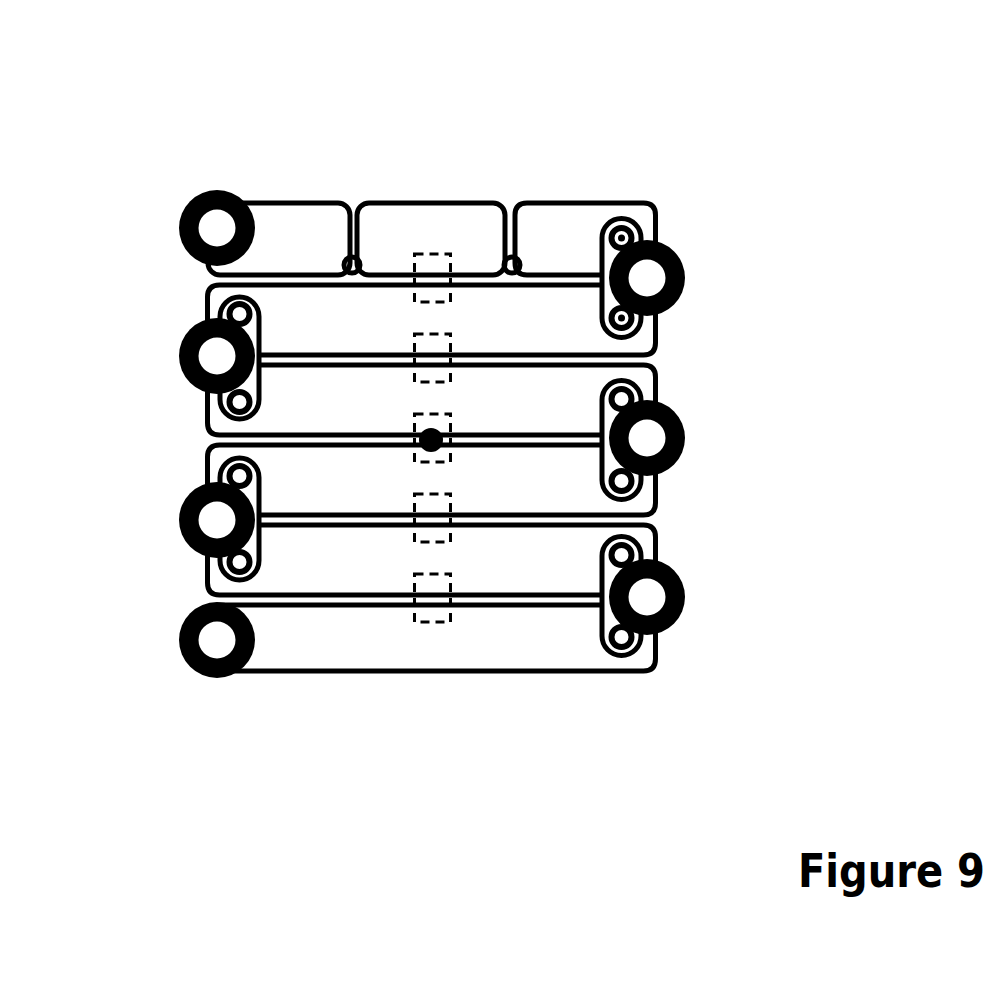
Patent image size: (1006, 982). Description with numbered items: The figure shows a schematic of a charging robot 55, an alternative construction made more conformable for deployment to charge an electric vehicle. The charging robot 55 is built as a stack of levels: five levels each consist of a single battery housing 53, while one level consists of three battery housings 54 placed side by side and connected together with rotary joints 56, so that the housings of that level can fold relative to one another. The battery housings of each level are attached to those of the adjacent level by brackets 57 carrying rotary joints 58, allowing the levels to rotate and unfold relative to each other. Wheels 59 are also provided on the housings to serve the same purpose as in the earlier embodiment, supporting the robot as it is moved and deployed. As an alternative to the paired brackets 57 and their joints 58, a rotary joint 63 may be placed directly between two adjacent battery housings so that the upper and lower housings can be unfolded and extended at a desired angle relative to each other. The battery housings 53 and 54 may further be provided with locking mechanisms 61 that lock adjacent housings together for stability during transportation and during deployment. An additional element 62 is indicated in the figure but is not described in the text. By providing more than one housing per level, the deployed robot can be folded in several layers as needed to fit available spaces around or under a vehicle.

The single battery housing 53 is at (460, 435).
The battery housings 54 is at (288, 220).
The charging robot 55 is at (511, 432).
The rotary joints 56 is at (350, 256).
The brackets 57 is at (745, 323).
The rotary joints 58 is at (627, 238).
The wheels 59 is at (690, 594).
The locking mechanisms 61 is at (405, 333).
The electrical contact 62 is at (422, 416).
The rotary joint 63 is at (598, 467).